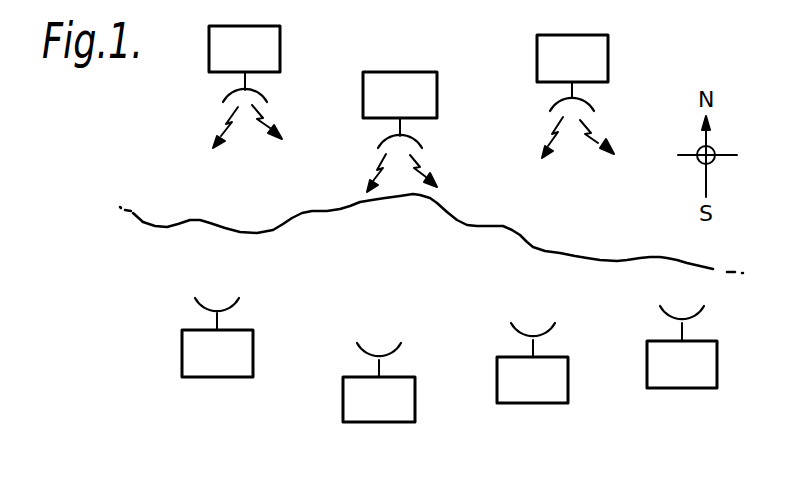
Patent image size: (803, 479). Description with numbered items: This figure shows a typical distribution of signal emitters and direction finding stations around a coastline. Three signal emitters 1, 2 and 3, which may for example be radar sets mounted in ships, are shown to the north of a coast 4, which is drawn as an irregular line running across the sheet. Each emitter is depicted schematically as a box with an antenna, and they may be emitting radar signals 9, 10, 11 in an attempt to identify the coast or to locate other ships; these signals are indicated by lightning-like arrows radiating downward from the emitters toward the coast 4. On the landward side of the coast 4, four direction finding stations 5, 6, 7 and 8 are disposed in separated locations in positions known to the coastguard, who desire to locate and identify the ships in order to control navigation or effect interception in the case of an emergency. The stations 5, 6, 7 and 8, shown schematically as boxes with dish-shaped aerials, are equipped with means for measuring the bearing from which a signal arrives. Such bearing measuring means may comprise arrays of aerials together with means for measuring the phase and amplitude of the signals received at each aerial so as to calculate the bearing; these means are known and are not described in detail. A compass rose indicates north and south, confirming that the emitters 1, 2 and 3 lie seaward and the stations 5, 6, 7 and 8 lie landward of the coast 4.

The signal emitter 1 is at (263, 50).
The signal emitter 2 is at (418, 96).
The signal emitter 3 is at (594, 58).
The coast 4 is at (627, 260).
The direction finding station 5 is at (233, 356).
The direction finding station 6 is at (397, 400).
The direction finding station 7 is at (550, 382).
The direction finding station 8 is at (700, 368).
The radar signal 9 is at (261, 117).
The radar signal 10 is at (428, 163).
The radar signal 11 is at (590, 134).